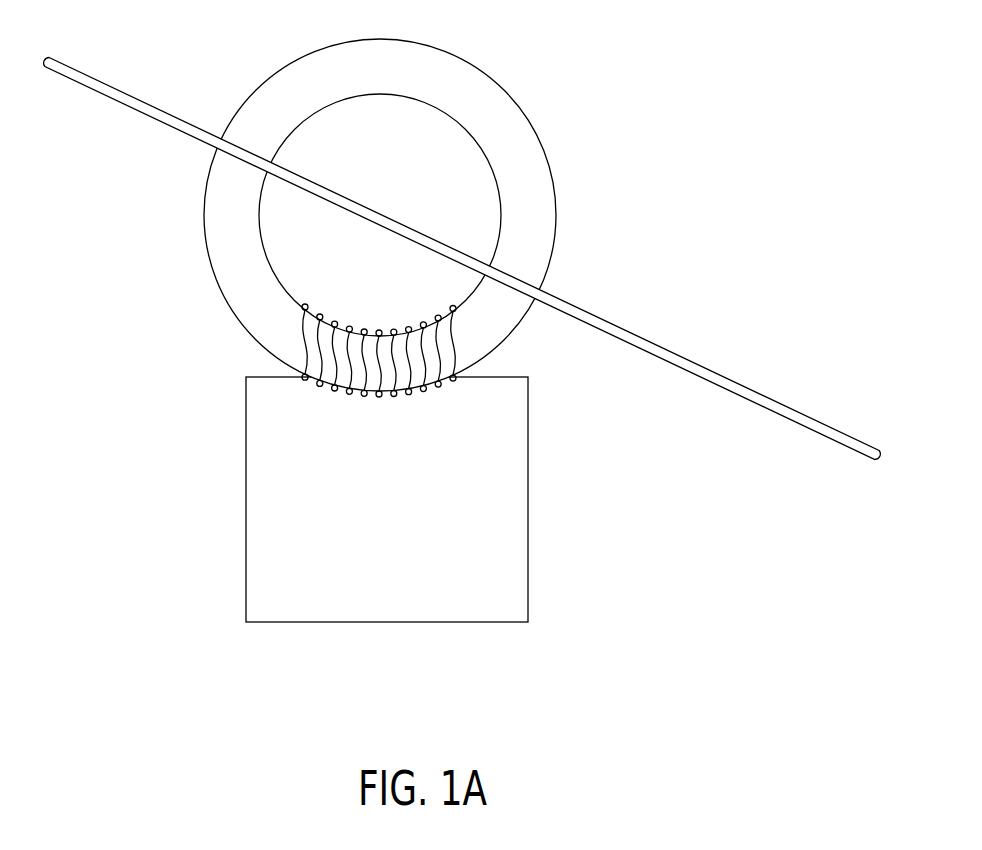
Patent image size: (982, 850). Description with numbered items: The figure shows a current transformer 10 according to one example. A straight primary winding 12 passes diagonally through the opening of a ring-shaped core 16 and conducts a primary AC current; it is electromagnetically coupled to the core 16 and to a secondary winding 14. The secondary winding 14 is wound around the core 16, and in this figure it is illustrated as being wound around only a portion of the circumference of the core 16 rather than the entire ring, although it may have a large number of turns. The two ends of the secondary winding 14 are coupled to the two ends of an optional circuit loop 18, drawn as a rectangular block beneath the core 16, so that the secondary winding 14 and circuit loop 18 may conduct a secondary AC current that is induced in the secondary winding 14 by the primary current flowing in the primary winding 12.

The current transformer 10 is at (646, 626).
The primary winding 12 is at (157, 108).
The secondary winding 14 is at (300, 330).
The core 16 is at (503, 89).
The circuit loop 18 is at (246, 493).